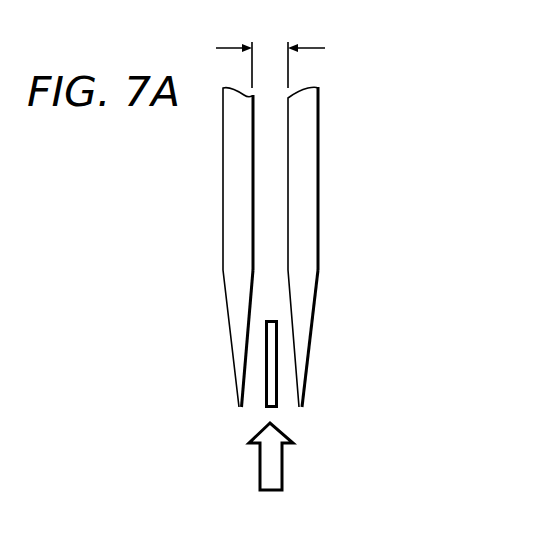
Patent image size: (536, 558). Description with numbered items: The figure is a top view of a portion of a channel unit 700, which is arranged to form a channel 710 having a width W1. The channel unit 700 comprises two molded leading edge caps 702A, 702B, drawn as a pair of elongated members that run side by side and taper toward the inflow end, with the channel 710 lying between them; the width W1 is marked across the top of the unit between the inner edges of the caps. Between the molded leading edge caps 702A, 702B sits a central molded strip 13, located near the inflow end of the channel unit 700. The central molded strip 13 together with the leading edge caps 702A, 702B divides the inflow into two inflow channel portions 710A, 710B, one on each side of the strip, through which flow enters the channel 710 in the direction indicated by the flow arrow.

The channel unit 700 is at (187, 195).
The molded leading edge cap 702A is at (236, 336).
The molded leading edge cap 702B is at (305, 337).
The channel 710 is at (271, 220).
The inflow channel portion 710A is at (250, 403).
The inflow channel portion 710B is at (288, 403).
The central molded strip 13 is at (272, 373).
The width W1 is at (270, 47).